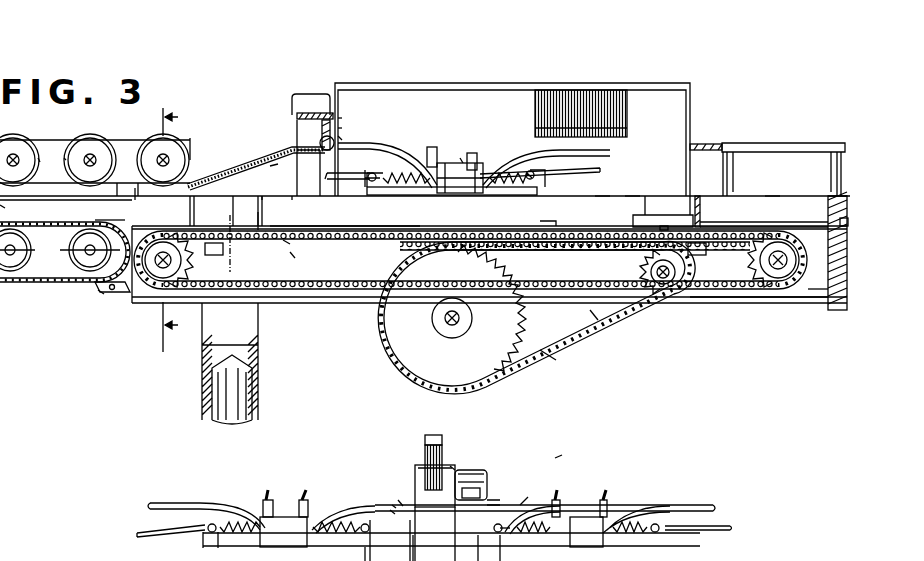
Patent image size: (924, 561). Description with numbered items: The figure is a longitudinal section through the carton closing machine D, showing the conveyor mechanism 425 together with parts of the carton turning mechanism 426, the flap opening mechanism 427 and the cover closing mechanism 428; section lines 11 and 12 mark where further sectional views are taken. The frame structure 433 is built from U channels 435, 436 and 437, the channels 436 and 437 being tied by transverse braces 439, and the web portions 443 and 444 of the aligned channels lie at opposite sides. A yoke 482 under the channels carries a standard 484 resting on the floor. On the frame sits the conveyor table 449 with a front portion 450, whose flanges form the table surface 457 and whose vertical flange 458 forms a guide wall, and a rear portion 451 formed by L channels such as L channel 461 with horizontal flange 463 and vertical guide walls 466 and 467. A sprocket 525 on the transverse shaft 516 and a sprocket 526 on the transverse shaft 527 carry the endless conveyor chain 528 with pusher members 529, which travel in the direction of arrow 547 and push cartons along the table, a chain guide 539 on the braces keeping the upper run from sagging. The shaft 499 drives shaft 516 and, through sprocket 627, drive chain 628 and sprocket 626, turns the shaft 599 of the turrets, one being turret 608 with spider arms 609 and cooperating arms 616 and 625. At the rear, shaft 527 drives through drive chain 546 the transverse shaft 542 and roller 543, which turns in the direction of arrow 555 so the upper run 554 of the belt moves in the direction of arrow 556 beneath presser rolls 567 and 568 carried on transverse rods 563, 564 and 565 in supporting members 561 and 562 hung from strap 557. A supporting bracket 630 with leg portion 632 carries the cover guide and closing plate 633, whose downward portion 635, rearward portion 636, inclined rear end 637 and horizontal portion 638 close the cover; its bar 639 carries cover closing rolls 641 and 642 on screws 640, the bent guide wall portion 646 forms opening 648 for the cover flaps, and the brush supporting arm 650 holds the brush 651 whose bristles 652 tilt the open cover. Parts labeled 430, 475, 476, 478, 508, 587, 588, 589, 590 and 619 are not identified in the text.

In FIG. 3, the conveyor mechanism 425 is at (832, 214).
In FIG. 3, the carton turning mechanism 426 is at (668, 212).
In FIG. 3, the flap opening mechanism 427 is at (462, 165).
In FIG. 10, the flap opening mechanism 427 is at (415, 480).
In FIG. 3, the cover closing mechanism 428 is at (317, 145).
In FIG. 10, the cover closing mechanism 428 is at (470, 470).
In FIG. 3, the wheel 430 is at (158, 156).
In FIG. 10, the wheel 430 is at (512, 500).
In FIG. 3, the frame structure 433 is at (732, 302).
In FIG. 3, the U channel 435 is at (792, 300).
In FIG. 3, the U channel 436 is at (338, 301).
In FIG. 3, the U channel 437 is at (838, 312).
In FIG. 3, the transverse braces 439 is at (218, 256).
In FIG. 3, the web portion 443 is at (812, 292).
In FIG. 3, the web portion 444 is at (570, 268).
In FIG. 3, the conveyor table 449 is at (600, 196).
In FIG. 10, the conveyor table 449 is at (451, 546).
In FIG. 3, the front portion 450 is at (816, 200).
In FIG. 3, the rear portion 451 is at (282, 158).
In FIG. 3, the table surface 457 is at (782, 222).
In FIG. 3, the vertical flange 458 is at (770, 196).
In FIG. 3, the L channel 461 is at (578, 170).
In FIG. 3, the horizontal flange 463 is at (396, 226).
In FIG. 3, the vertical flange 466 is at (346, 211).
In FIG. 10, the vertical flange 466 is at (505, 548).
In FIG. 10, the vertical flange 467 is at (365, 552).
In FIG. 3, the brace 475 is at (632, 196).
In FIG. 3, the stop 476 is at (548, 221).
In FIG. 3, the frame plate 478 is at (286, 196).
In FIG. 3, the yoke 482 is at (242, 336).
In FIG. 3, the standard 484 is at (215, 403).
In FIG. 3, the shaft 499 is at (666, 292).
In FIG. 3, the fastener 508 is at (666, 210).
In FIG. 3, the transverse shaft 516 is at (790, 262).
In FIG. 3, the sprocket 525 is at (806, 272).
In FIG. 3, the sprocket 526 is at (150, 280).
In FIG. 3, the transverse shaft 527 is at (160, 286).
In FIG. 3, the endless conveyor chain 528 is at (315, 305).
In FIG. 3, the pusher members 529 is at (45, 282).
In FIG. 10, the pusher members 529 is at (478, 540).
In FIG. 3, the chain guide 539 is at (290, 244).
In FIG. 3, the transverse shaft 542 is at (25, 255).
In FIG. 3, the roller 543 is at (70, 250).
In FIG. 3, the endless drive chain 546 is at (100, 292).
In FIG. 3, the arrow 547 is at (298, 264).
In FIG. 3, the upper run 554 is at (50, 228).
In FIG. 3, the arrow 555 is at (112, 232).
In FIG. 3, the arrow 556 is at (0, 205).
In FIG. 3, the supporting strap 557 is at (135, 194).
In FIG. 3, the supporting member 561 is at (38, 158).
In FIG. 10, the supporting member 561 is at (528, 497).
In FIG. 10, the supporting member 562 is at (390, 510).
In FIG. 3, the transverse rod 563 is at (192, 138).
In FIG. 3, the transverse rod 564 is at (90, 157).
In FIG. 3, the transverse rod 565 is at (13, 158).
In FIG. 3, the presser roll 567 is at (192, 152).
In FIG. 10, the presser roll 567 is at (431, 512).
In FIG. 3, the presser roll 568 is at (64, 158).
In FIG. 3, the clamp 587 is at (663, 203).
In FIG. 3, the upright 588 is at (836, 160).
In FIG. 3, the top bar 589 is at (806, 143).
In FIG. 3, the end cap 590 is at (706, 143).
In FIG. 3, the shaft 599 is at (448, 326).
In FIG. 3, the turret 608 is at (432, 172).
In FIG. 3, the spider arms 609 is at (440, 193).
In FIG. 3, the arm 616 is at (462, 158).
In FIG. 10, the arm 616 is at (142, 535).
In FIG. 10, the pivot block 619 is at (280, 516).
In FIG. 3, the arm 625 is at (383, 155).
In FIG. 10, the arm 625 is at (198, 502).
In FIG. 3, the sprocket 626 is at (490, 366).
In FIG. 3, the sprocket 627 is at (642, 262).
In FIG. 3, the endless drive chain 628 is at (548, 356).
In FIG. 3, the supporting bracket 630 is at (292, 110).
In FIG. 10, the supporting bracket 630 is at (490, 500).
In FIG. 3, the leg portion 632 is at (302, 112).
In FIG. 10, the leg portion 632 is at (462, 482).
In FIG. 3, the cover guide and closing plate 633 is at (340, 128).
In FIG. 10, the cover guide and closing plate 633 is at (418, 470).
In FIG. 3, the downwardly extending portion 635 is at (340, 118).
In FIG. 10, the downwardly extending portion 635 is at (460, 476).
In FIG. 3, the rearwardly extending portion 636 is at (283, 152).
In FIG. 3, the rear end 637 is at (273, 167).
In FIG. 10, the rear end 637 is at (413, 540).
In FIG. 3, the horizontal portion 638 is at (226, 211).
In FIG. 3, the bar 639 is at (372, 178).
In FIG. 10, the bar 639 is at (370, 505).
In FIG. 10, the screws 640 is at (398, 500).
In FIG. 3, the cover closing roll 641 is at (338, 136).
In FIG. 10, the cover closing roll 641 is at (470, 487).
In FIG. 10, the cover closing roll 642 is at (392, 505).
In FIG. 3, the outwardly bent portion 646 is at (262, 196).
In FIG. 3, the opening 648 is at (292, 196).
In FIG. 3, the brush supporting arm 650 is at (348, 82).
In FIG. 10, the brush supporting arm 650 is at (452, 456).
In FIG. 3, the brush 651 is at (622, 96).
In FIG. 10, the brush 651 is at (431, 437).
In FIG. 3, the bristles 652 is at (625, 118).
In FIG. 10, the bristles 652 is at (450, 466).
In FIG. 3, the section line 11 is at (253, 242).
In FIG. 3, the section line 12 is at (182, 230).
In FIG. 3, the carton closing machine D is at (598, 320).
In FIG. 10, the carton closing machine D is at (562, 455).